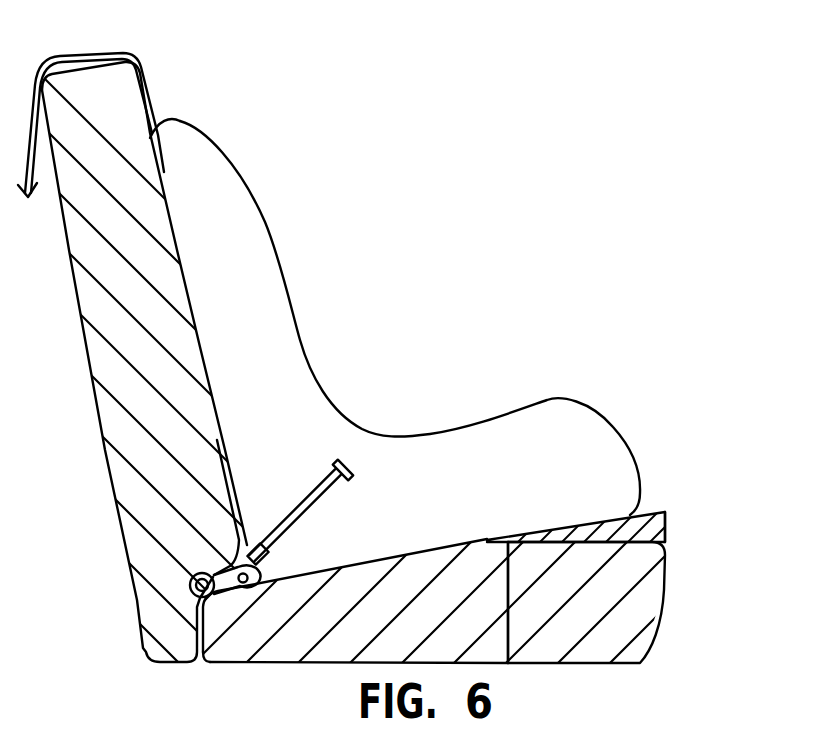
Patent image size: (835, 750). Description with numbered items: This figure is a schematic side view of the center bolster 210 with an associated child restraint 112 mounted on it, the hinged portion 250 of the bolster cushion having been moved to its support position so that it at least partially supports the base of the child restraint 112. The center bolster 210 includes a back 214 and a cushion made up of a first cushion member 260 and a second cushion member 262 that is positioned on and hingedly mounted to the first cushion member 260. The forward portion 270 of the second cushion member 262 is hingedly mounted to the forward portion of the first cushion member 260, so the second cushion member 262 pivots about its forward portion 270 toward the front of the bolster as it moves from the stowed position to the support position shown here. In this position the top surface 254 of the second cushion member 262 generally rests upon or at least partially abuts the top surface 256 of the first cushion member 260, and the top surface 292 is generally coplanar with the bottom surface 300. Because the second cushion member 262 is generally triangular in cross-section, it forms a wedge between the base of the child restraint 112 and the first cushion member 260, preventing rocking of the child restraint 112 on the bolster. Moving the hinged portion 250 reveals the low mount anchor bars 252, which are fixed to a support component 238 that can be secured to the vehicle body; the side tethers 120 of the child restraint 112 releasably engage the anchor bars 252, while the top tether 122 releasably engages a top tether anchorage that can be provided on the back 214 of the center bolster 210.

The child restraint 112 is at (302, 333).
The side tethers 120 is at (300, 512).
The top tether 122 is at (122, 58).
The center bolster 210 is at (677, 553).
The back 214 is at (175, 231).
The support component 238 is at (212, 592).
The hinged portion 250 is at (650, 500).
The anchor bars 252 is at (245, 595).
The top surface of the hinged portion 254 is at (603, 543).
The top surface of the remainder of the cushion 256 is at (576, 537).
The first cushion member 260 is at (637, 613).
The second cushion member 262 is at (667, 530).
The forward portion of the second cushion member 270 is at (512, 610).
The top surface 292 is at (364, 563).
The bottom surface 300 is at (569, 537).